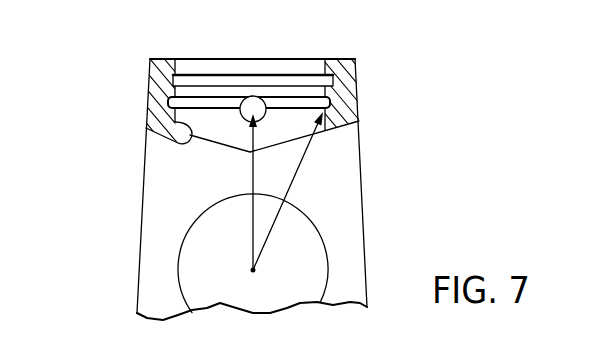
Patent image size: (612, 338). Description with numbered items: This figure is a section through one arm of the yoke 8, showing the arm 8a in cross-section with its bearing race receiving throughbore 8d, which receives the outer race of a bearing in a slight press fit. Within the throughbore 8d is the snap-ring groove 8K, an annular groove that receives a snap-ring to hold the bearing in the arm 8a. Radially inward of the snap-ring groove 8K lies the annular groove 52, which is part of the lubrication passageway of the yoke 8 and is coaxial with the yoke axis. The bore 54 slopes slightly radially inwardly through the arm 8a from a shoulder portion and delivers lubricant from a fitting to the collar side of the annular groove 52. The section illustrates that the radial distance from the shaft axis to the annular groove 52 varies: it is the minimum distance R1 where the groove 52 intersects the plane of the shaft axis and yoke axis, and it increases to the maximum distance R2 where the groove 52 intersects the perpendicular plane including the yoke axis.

The yoke 8 is at (364, 85).
The arm 8a is at (148, 88).
The bearing race receiving throughbore 8d is at (175, 136).
The snap-ring groove 8K is at (305, 78).
The annular groove 52 is at (212, 105).
The bore 54 is at (255, 103).
The minimum radial distance R1 is at (252, 178).
The maximum radial distance R2 is at (294, 180).